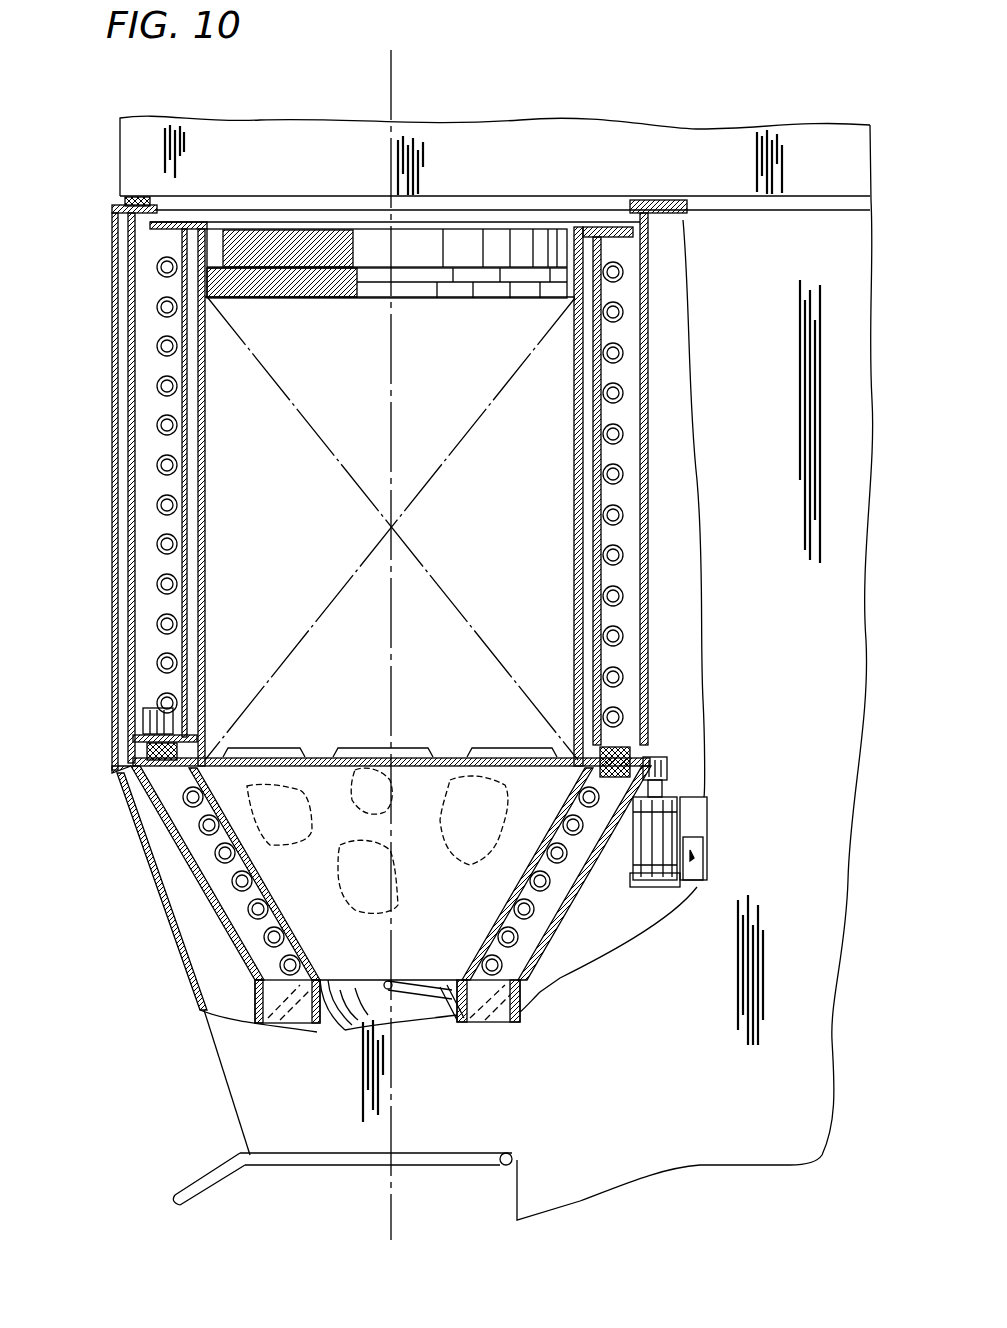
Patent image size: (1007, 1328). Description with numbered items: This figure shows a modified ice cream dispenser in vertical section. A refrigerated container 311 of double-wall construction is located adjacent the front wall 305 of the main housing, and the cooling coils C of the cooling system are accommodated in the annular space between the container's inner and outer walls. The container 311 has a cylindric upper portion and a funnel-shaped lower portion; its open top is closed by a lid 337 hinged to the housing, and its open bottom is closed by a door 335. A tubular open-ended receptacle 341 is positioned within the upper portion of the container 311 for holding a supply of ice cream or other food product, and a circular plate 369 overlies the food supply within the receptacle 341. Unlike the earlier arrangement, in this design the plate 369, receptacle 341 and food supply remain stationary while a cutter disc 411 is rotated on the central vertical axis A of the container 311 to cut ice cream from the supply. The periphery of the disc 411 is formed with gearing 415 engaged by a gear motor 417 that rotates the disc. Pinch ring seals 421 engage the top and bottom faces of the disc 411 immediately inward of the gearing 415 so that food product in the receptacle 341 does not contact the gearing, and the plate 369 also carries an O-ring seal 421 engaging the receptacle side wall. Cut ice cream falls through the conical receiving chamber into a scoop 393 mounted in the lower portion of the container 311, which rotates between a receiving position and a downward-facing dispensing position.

The central vertical axis A is at (398, 88).
The lid 337 is at (700, 127).
The circular plate 369 is at (497, 247).
The pinch ring seals 421 is at (603, 293).
The refrigerated container 311 is at (647, 437).
The tubular open-ended receptacle 341 is at (587, 497).
The cooling coils C is at (614, 555).
The front wall 305 is at (112, 642).
The cutter disc 411 is at (328, 750).
The gear motor 417 is at (690, 832).
The gearing 415 is at (123, 778).
The scoop 393 is at (323, 1033).
The door 335 is at (320, 1170).